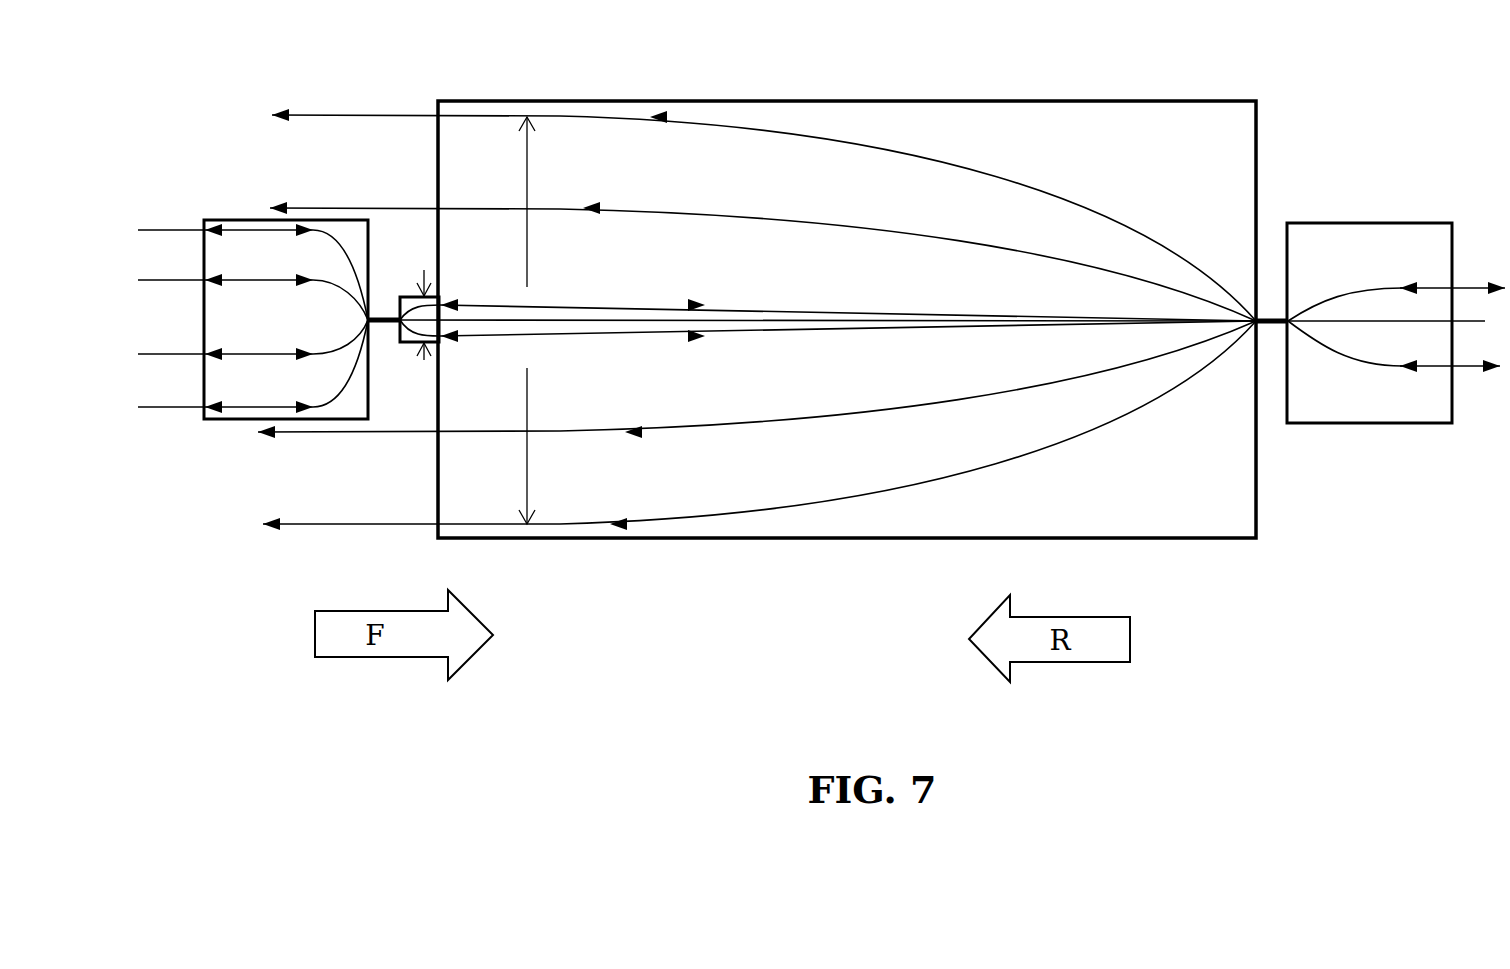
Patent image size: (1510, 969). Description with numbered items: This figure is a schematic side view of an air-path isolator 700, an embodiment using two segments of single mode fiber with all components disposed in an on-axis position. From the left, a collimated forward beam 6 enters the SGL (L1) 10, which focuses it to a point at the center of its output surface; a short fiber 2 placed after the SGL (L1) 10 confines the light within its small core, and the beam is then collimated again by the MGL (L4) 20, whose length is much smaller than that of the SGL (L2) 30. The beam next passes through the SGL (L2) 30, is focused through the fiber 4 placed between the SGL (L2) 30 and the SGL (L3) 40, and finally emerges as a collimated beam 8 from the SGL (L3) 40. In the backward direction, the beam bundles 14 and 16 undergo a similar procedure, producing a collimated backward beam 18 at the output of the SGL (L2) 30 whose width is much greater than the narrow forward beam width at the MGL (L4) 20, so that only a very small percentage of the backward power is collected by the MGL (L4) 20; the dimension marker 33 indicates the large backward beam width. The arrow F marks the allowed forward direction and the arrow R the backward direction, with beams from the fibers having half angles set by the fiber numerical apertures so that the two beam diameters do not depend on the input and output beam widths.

The air-path isolator 700 is at (1108, 74).
The SGL (L2) 30 is at (533, 98).
The backward beam bundle 14 is at (1115, 218).
The backward beam bundle 16 is at (740, 300).
The collimated backward beam 18 is at (405, 434).
The width dimension d2 33 is at (465, 300).
The collimated forward beam 6 is at (187, 411).
The SGL (L1) 10 is at (218, 220).
The fiber 2 is at (376, 313).
The MGL (L4) 20 is at (402, 345).
The fiber 4 is at (1268, 330).
The SGL (L3) 40 is at (1345, 222).
The collimated output beam 8 is at (1470, 375).